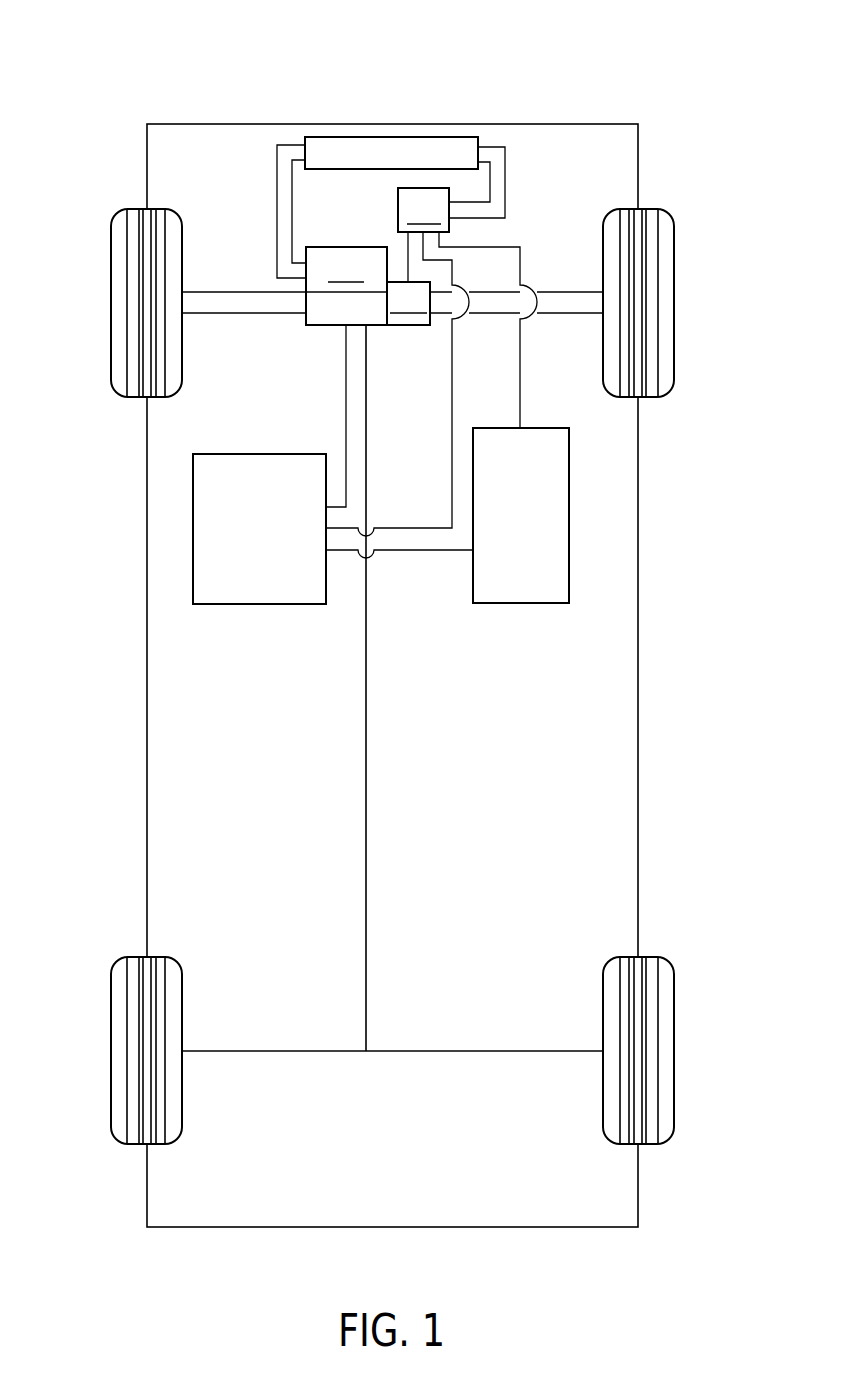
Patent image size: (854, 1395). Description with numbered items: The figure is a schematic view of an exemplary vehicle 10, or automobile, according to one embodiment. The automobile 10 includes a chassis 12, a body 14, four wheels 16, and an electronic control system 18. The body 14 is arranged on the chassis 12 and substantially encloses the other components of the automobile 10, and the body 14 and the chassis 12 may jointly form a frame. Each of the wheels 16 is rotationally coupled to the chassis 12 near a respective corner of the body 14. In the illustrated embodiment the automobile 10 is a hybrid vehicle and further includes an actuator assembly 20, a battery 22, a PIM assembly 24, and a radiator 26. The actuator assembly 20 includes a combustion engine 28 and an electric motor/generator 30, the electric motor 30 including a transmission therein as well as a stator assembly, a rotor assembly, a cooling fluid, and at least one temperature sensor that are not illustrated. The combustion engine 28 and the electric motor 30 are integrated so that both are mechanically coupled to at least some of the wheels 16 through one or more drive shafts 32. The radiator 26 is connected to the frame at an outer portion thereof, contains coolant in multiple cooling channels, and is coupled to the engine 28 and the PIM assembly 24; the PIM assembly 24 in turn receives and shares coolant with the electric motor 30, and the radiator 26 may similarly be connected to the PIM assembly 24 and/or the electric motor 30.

The vehicle 10 is at (632, 53).
The chassis 12 is at (366, 700).
The body 14 is at (147, 504).
The wheels 16 is at (111, 272).
The electronic control system 18 is at (253, 604).
The actuator assembly 20 is at (368, 348).
The battery 22 is at (520, 604).
The PIM assembly 24 is at (431, 362).
The radiator 26 is at (358, 137).
The combustion engine 28 is at (346, 286).
The electric motor/generator 30 is at (390, 338).
The drive shafts 32 is at (234, 291).